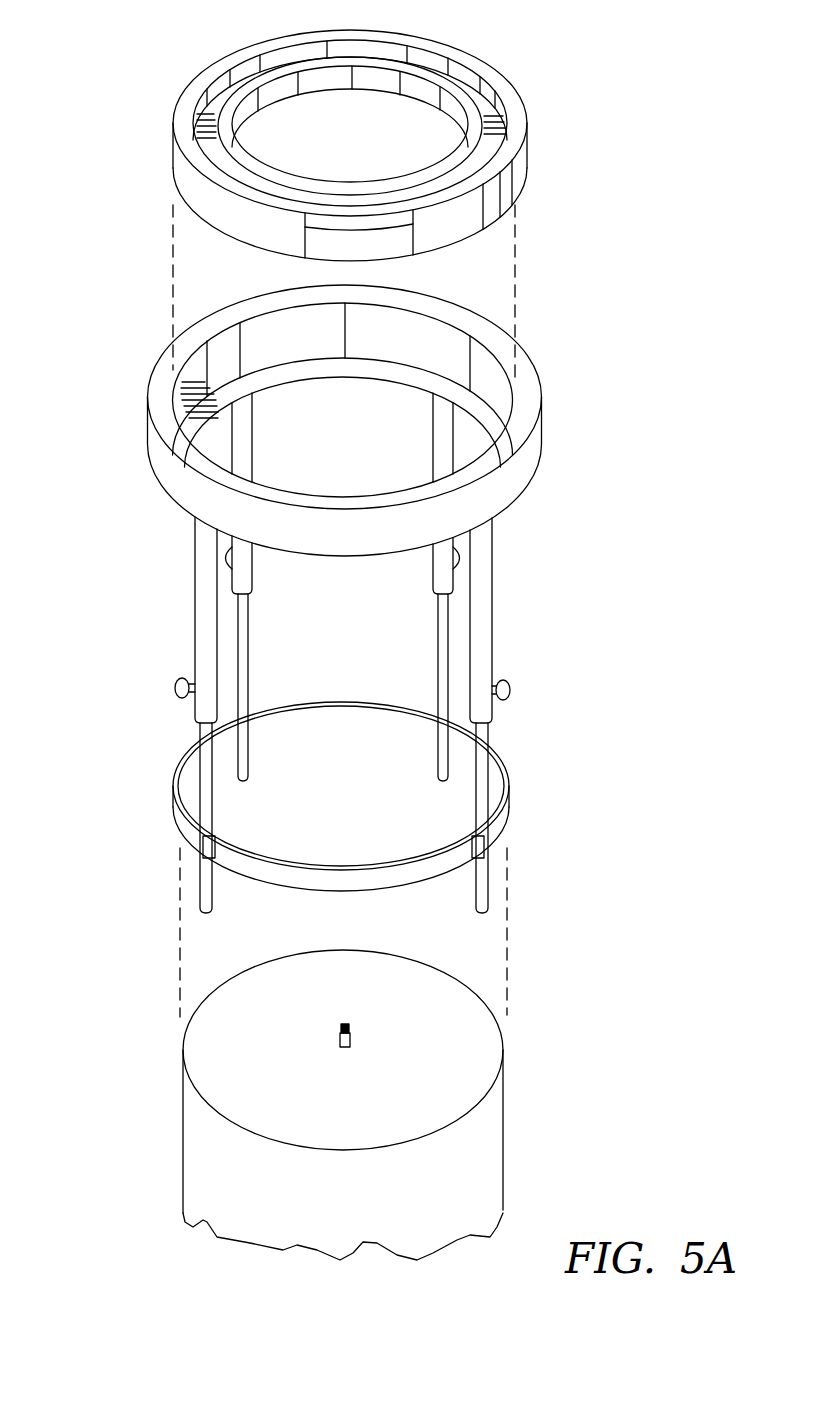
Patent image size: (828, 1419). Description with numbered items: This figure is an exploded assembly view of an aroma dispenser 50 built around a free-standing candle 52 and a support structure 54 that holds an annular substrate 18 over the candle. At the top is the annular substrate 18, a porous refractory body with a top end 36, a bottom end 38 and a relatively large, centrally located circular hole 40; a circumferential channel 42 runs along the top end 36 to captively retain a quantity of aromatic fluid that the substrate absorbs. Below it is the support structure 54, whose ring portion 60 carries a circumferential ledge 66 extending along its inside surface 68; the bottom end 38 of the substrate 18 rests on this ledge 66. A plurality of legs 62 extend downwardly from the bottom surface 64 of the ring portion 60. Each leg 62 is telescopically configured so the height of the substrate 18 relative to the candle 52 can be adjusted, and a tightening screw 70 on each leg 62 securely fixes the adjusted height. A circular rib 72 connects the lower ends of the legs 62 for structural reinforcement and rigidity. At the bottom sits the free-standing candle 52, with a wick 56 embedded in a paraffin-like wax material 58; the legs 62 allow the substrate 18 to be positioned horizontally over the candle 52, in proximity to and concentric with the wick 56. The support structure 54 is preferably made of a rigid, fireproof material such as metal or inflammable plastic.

The annular substrate 18 is at (534, 156).
The top end 36 is at (483, 77).
The bottom end 38 is at (500, 213).
The circular hole 40 is at (405, 68).
The circumferential channel 42 is at (497, 122).
The aroma dispenser 50 is at (136, 126).
The free-standing candle 52 is at (505, 1125).
The support structure 54 is at (165, 522).
The wick 56 is at (352, 1030).
The paraffin-like wax material 58 is at (220, 1065).
The ring portion 60 is at (172, 474).
The legs 62 is at (240, 560).
The bottom surface 64 is at (507, 505).
The circumferential ledge 66 is at (190, 415).
The inside surface 68 is at (470, 352).
The tightening screw 70 is at (222, 557).
The circular rib 72 is at (180, 782).